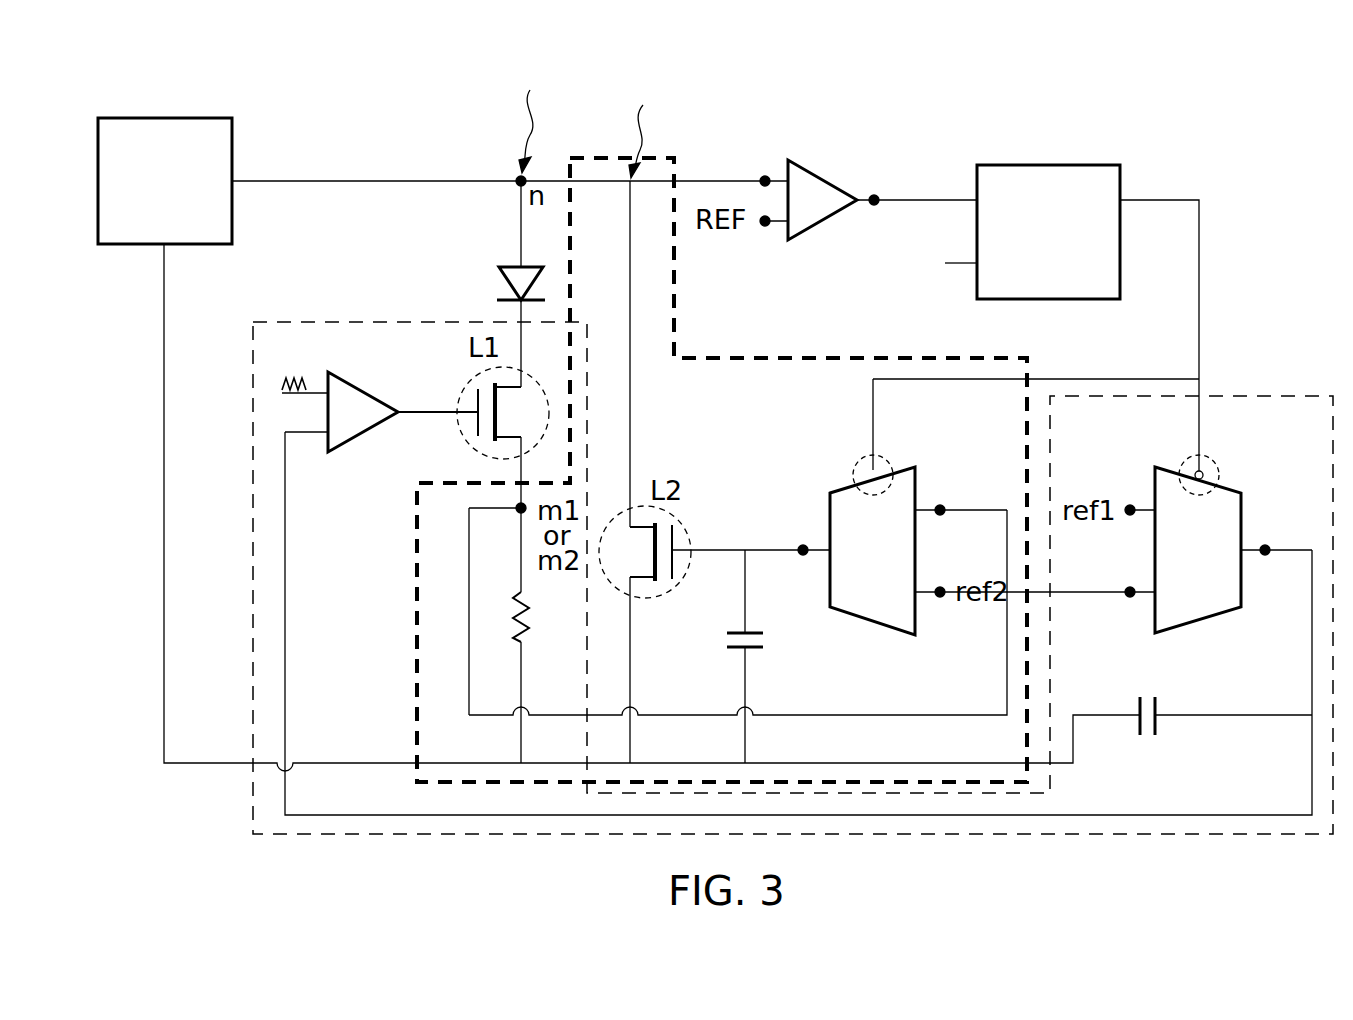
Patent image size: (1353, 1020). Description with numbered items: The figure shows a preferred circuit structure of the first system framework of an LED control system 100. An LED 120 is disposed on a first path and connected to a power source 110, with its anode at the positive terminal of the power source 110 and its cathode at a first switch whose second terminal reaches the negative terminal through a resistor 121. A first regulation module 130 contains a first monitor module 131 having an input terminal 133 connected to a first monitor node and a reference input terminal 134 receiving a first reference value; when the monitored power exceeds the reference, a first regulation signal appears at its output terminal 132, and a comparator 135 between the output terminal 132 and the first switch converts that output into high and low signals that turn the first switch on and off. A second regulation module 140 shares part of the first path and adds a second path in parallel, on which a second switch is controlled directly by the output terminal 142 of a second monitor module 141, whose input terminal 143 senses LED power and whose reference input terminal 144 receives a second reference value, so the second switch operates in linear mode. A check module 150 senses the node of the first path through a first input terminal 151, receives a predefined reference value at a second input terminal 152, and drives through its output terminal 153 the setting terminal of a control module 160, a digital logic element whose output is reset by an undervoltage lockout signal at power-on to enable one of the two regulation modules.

The circuit 100 is at (1234, 108).
The power source 110 is at (165, 181).
The LED 120 is at (497, 284).
The resistor 121 is at (512, 630).
The first regulation module 130 is at (1271, 392).
The first monitor module 131 is at (1196, 640).
The output terminal 132 is at (1266, 545).
The input terminal 133 is at (1128, 598).
The reference input terminal 134 is at (1128, 504).
The comparator 135 is at (362, 388).
The second regulation module 140 is at (605, 157).
The second monitor module 141 is at (866, 642).
The output terminal 142 is at (802, 556).
The input terminal 143 is at (940, 504).
The reference input terminal 144 is at (940, 598).
The check module 150 is at (830, 178).
The first input terminal 151 is at (765, 176).
The second input terminal 152 is at (765, 227).
The output terminal 153 is at (874, 194).
The control module 160 is at (1046, 165).